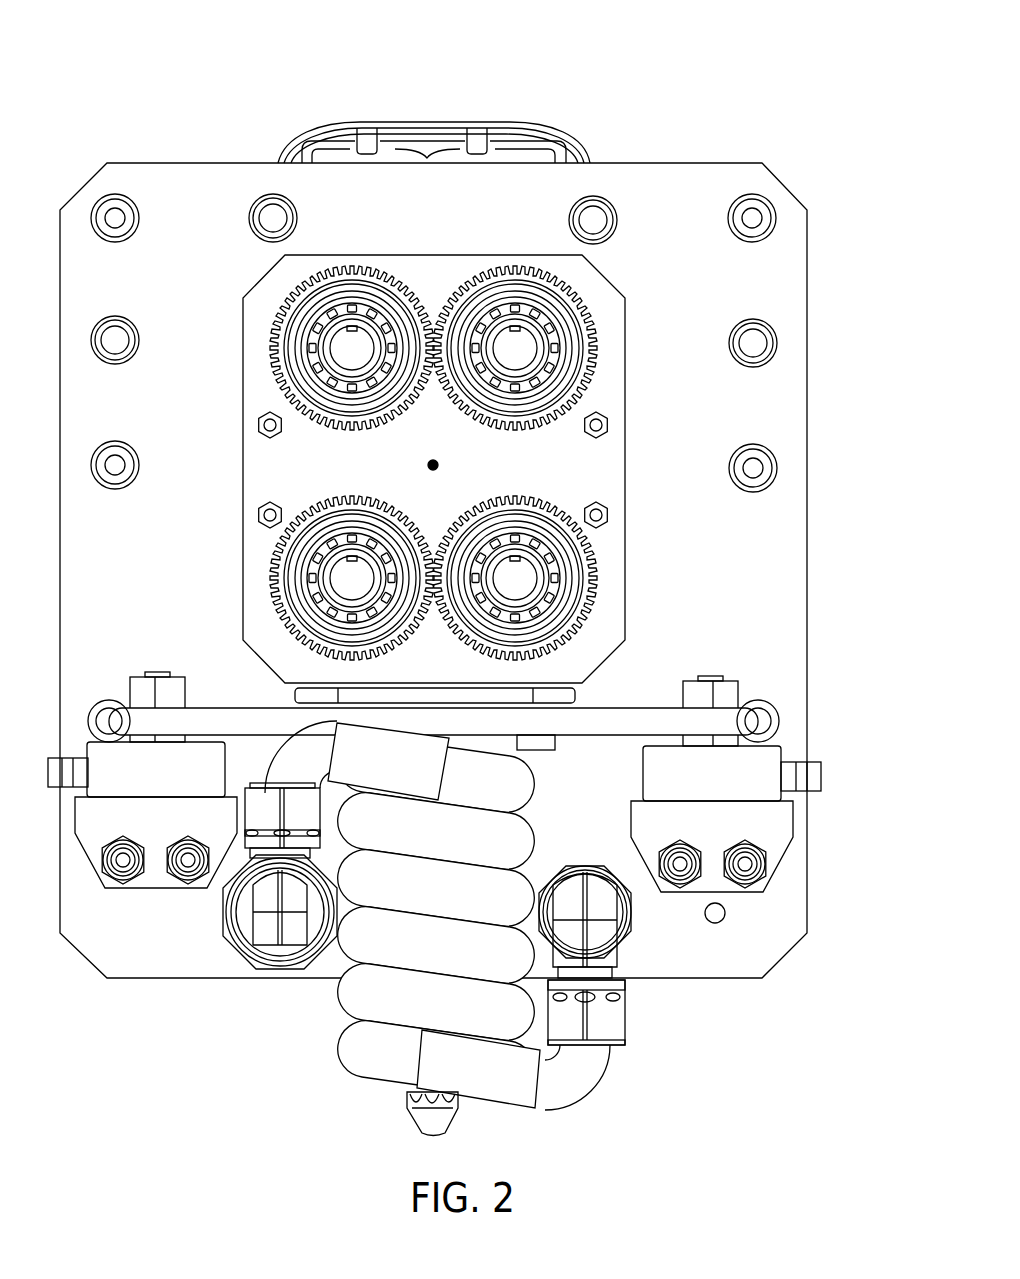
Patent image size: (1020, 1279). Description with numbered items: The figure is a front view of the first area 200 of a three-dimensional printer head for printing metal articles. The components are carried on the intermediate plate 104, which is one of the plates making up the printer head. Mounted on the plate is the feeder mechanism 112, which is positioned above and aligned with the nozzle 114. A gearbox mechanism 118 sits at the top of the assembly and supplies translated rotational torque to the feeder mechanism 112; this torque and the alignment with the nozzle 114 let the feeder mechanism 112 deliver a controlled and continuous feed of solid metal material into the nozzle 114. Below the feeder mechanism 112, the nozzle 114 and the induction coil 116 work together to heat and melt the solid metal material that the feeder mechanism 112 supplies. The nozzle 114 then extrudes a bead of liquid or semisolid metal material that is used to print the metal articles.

The first area 200 is at (775, 85).
The intermediate plate 104 is at (809, 313).
The gearbox mechanism 118 is at (548, 137).
The feeder mechanism 112 is at (682, 539).
The induction coil 116 is at (342, 1043).
The nozzle 114 is at (420, 1117).